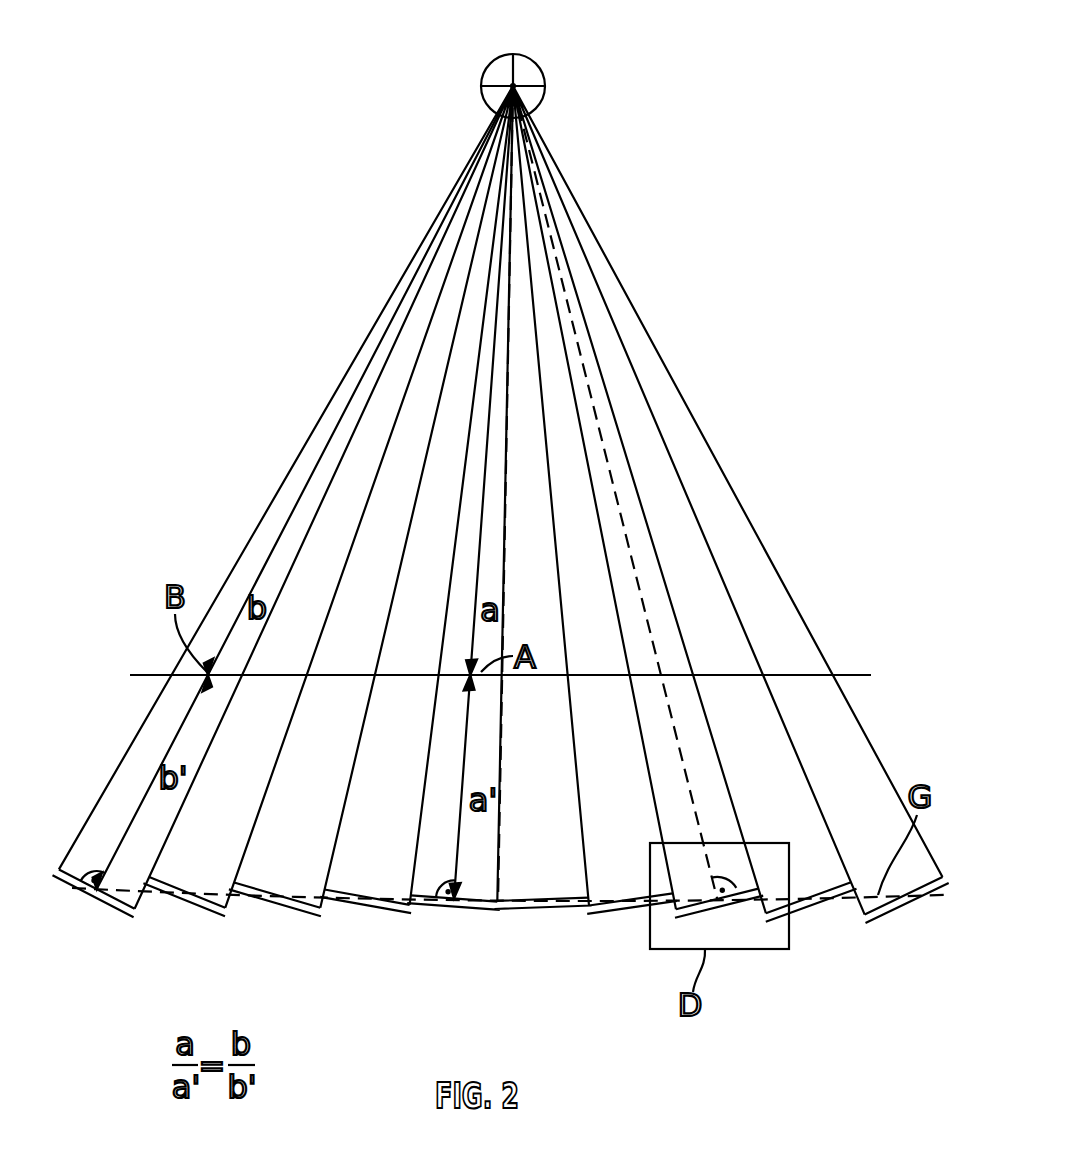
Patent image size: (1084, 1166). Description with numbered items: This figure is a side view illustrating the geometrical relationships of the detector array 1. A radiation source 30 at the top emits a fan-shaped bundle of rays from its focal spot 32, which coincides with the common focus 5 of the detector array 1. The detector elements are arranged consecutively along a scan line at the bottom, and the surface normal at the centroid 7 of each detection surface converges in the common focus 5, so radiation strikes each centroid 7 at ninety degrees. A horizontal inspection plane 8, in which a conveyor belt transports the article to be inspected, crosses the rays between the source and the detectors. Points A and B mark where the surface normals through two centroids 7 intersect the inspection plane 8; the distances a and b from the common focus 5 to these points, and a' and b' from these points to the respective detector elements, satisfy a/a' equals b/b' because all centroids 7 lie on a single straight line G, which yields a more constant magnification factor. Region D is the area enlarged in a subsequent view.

The detector array 1 is at (133, 983).
The common focus 5 is at (515, 87).
The centroid 7 is at (93, 896).
The inspection plane 8 is at (860, 674).
The radiation source 30 is at (492, 61).
The focal spot 32 is at (523, 64).